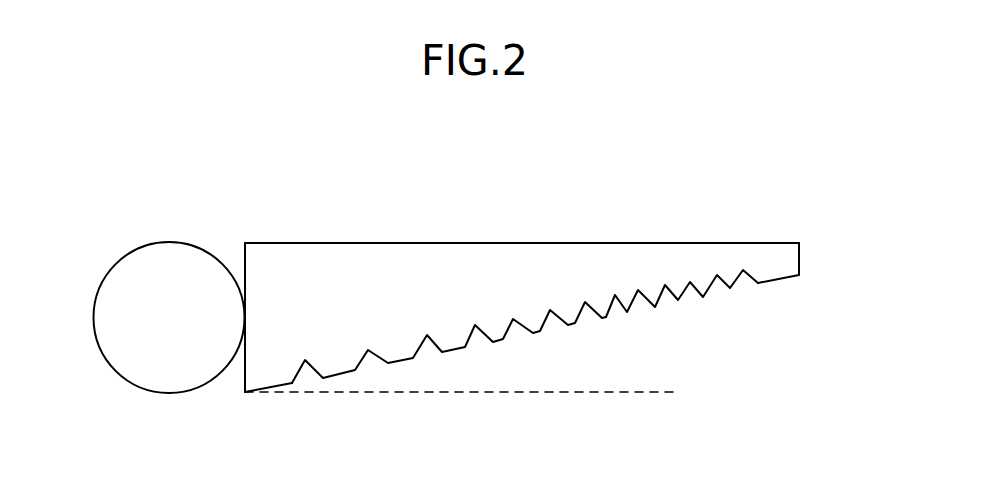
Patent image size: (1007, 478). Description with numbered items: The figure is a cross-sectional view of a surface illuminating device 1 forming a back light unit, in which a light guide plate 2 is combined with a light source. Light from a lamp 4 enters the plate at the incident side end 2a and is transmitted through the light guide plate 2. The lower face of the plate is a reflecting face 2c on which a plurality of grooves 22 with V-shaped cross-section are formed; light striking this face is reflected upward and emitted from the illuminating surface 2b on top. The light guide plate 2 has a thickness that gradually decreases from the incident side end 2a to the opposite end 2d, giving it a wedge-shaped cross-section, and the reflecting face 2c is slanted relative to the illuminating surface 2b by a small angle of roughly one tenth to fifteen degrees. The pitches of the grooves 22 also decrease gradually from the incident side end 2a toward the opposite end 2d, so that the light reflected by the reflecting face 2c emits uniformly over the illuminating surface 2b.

The surface illuminating device 1 is at (326, 226).
The light guide plate 2 is at (434, 260).
The incident side end 2a is at (245, 366).
The illuminating surface 2b is at (569, 246).
The reflecting face 2c is at (501, 363).
The opposite end 2d is at (799, 259).
The lamp 4 is at (165, 256).
The grooves 22 is at (665, 300).